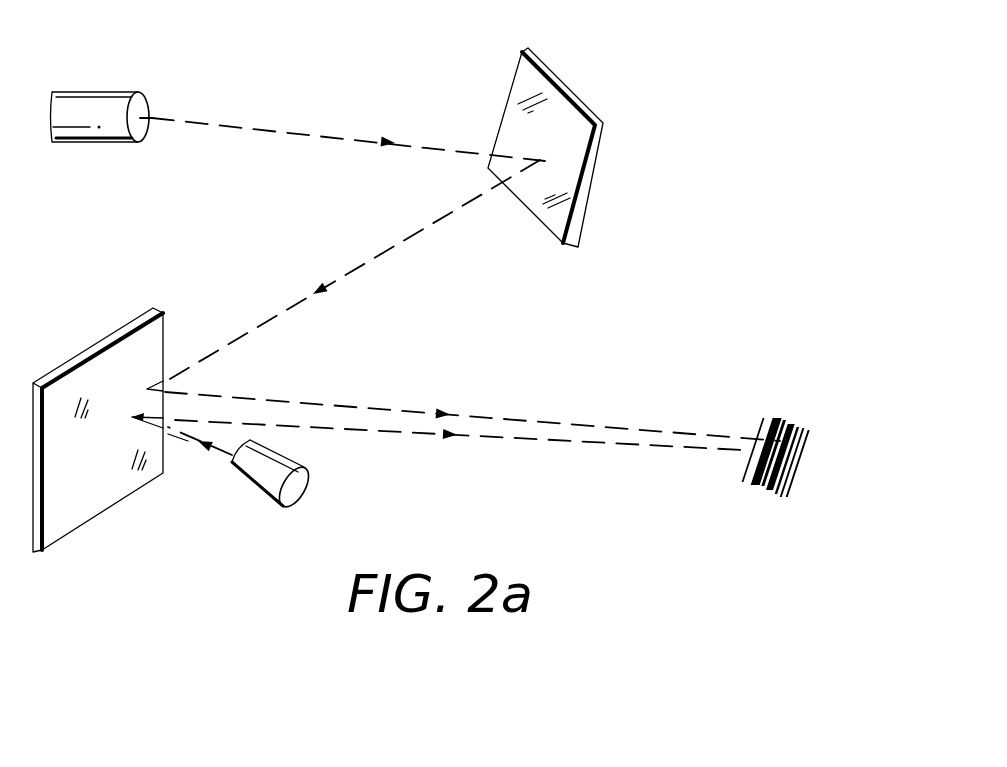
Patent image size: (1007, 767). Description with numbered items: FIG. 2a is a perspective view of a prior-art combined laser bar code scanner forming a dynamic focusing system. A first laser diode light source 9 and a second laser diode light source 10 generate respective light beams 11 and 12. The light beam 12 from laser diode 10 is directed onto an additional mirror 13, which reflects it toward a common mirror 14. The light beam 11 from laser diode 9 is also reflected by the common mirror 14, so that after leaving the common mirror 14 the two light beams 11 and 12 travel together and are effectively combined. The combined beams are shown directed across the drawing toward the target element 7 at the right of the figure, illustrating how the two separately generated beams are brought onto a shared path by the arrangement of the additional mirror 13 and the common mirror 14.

The bar code 7 is at (775, 410).
The first laser diode light source 9 is at (275, 473).
The second laser diode light source 10 is at (123, 93).
The light beam 11 is at (186, 435).
The light beam 12 is at (390, 247).
The additional mirror 13 is at (570, 168).
The common mirror 14 is at (73, 517).